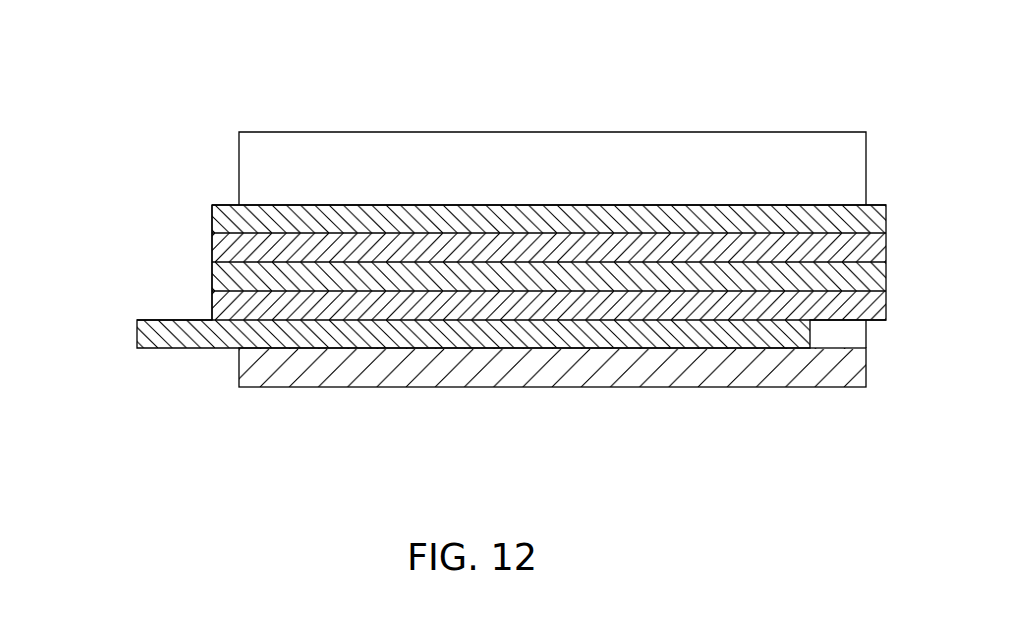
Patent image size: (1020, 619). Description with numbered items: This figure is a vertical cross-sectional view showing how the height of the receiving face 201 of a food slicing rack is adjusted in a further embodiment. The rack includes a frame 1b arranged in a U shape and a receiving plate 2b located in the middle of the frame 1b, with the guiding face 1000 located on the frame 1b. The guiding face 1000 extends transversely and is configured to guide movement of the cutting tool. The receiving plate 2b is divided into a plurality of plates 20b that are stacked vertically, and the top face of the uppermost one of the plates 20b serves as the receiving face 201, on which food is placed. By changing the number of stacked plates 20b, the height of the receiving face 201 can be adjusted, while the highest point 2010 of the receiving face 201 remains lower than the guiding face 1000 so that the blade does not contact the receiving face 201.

The guiding face 1000 is at (239, 132).
The frame 1b is at (753, 377).
The receiving plate 2b is at (461, 262).
The plates 20b is at (216, 218).
The receiving face 201 is at (441, 203).
The highest point 2010 is at (212, 205).